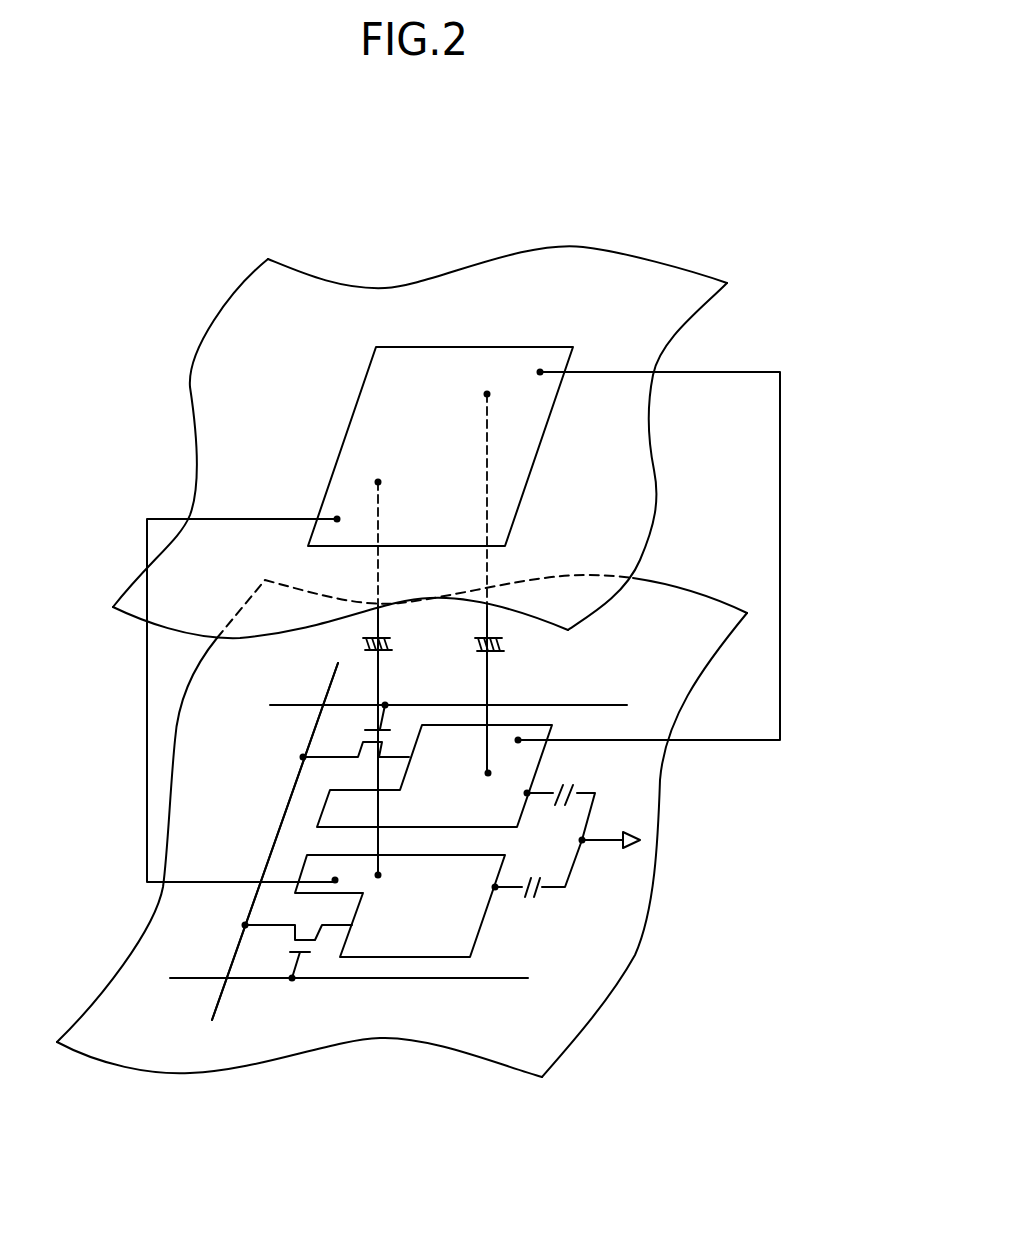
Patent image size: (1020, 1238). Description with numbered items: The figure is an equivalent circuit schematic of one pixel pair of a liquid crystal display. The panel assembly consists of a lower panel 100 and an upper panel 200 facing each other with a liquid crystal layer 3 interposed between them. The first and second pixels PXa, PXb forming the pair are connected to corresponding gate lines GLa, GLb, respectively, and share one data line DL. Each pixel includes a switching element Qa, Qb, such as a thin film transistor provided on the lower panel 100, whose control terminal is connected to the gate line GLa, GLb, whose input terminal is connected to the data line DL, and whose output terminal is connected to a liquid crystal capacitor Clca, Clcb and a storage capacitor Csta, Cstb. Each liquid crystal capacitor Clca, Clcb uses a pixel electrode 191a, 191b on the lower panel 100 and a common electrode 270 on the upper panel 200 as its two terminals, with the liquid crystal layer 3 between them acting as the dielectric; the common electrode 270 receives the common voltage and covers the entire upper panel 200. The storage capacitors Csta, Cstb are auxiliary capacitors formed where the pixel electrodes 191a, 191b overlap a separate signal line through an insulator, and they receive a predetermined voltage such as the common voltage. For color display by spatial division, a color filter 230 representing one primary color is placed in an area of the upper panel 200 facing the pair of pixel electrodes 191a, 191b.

The liquid crystal layer 3 is at (90, 769).
The lower panel 100 is at (701, 813).
The upper panel 200 is at (678, 484).
The color filter 230 is at (530, 484).
The common electrode 270 is at (651, 418).
The first pixel electrode 191a is at (483, 935).
The second pixel electrode 191b is at (540, 757).
The first pixel PXa is at (213, 700).
The second pixel PXb is at (673, 556).
The data line DL is at (275, 834).
The first gate line GLa is at (330, 978).
The second gate line GLb is at (427, 705).
The first switching element Qa is at (298, 951).
The second switching element Qb is at (356, 743).
The first liquid crystal capacitor Clca is at (400, 679).
The second liquid crystal capacitor Clcb is at (512, 584).
The first storage capacitor Csta is at (537, 882).
The second storage capacitor Cstb is at (582, 802).